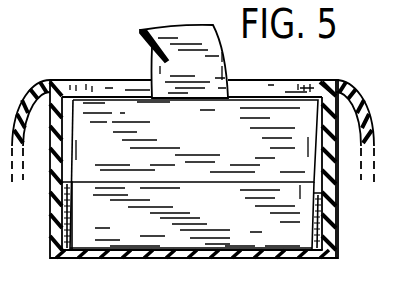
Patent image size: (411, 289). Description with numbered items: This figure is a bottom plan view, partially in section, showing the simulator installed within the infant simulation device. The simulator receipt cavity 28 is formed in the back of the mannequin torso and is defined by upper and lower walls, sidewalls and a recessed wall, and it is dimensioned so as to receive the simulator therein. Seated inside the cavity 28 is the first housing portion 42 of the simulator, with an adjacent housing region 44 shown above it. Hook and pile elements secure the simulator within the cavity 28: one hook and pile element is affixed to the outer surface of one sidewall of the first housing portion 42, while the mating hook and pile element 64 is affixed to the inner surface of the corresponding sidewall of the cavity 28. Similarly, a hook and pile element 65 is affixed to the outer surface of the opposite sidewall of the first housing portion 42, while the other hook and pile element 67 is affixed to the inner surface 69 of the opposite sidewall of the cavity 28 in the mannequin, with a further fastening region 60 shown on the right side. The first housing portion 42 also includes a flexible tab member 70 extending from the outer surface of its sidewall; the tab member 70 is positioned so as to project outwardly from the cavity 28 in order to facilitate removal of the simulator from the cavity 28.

The simulator receipt cavity 28 is at (314, 99).
The flexible tab member 70 is at (148, 46).
The upper liner portion 44 is at (224, 142).
The first housing portion 42 is at (229, 221).
The inner surface of sidewall 69 is at (68, 159).
The hook and pile element 67 is at (60, 228).
The hook and pile element 65 is at (73, 242).
The right fastener strip 60 is at (310, 238).
The hook and pile element 64 is at (327, 208).